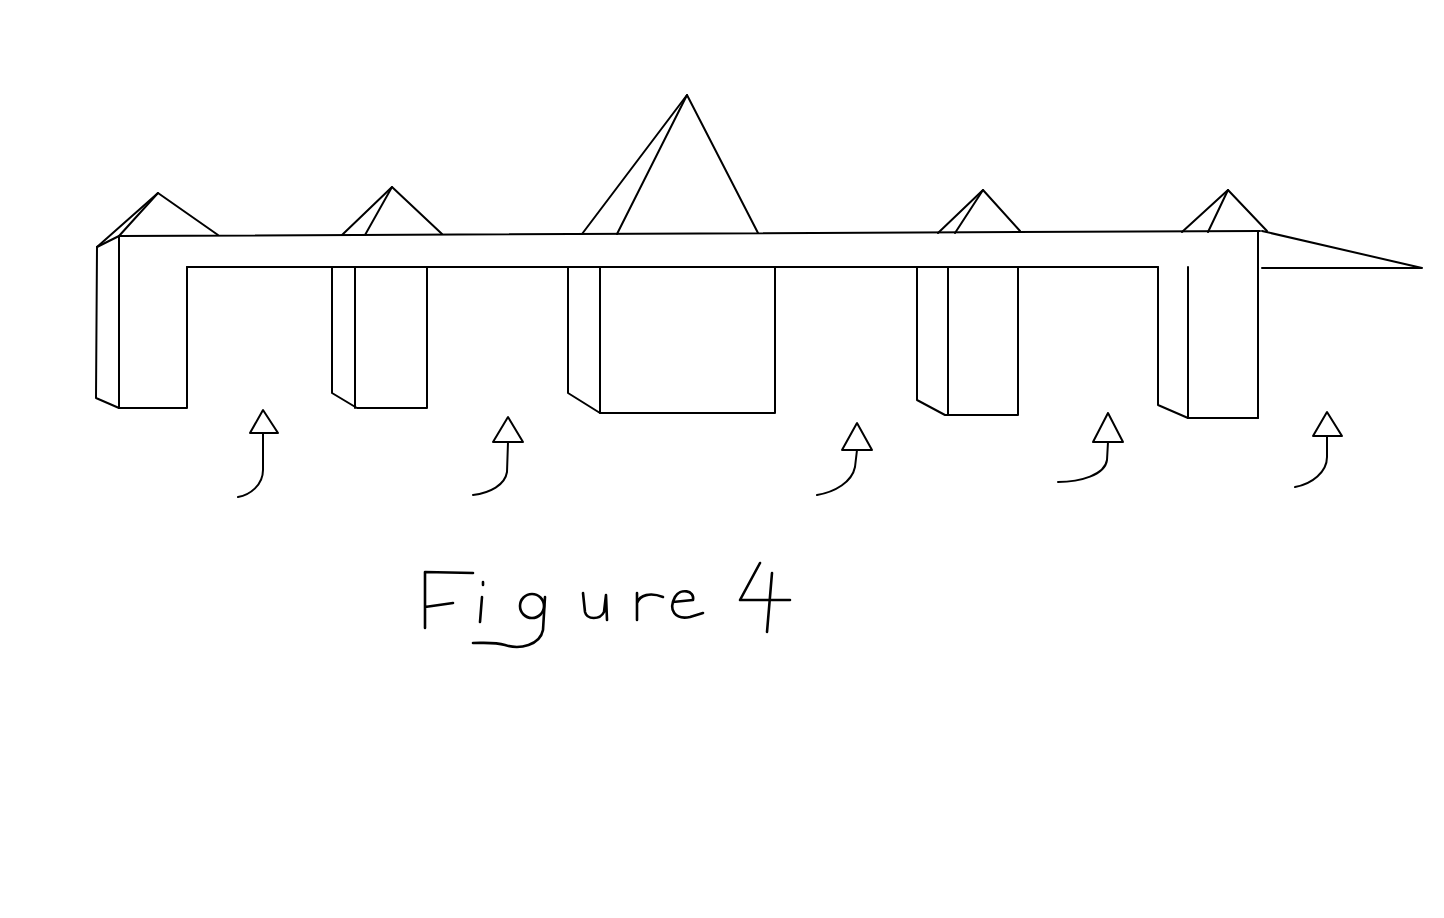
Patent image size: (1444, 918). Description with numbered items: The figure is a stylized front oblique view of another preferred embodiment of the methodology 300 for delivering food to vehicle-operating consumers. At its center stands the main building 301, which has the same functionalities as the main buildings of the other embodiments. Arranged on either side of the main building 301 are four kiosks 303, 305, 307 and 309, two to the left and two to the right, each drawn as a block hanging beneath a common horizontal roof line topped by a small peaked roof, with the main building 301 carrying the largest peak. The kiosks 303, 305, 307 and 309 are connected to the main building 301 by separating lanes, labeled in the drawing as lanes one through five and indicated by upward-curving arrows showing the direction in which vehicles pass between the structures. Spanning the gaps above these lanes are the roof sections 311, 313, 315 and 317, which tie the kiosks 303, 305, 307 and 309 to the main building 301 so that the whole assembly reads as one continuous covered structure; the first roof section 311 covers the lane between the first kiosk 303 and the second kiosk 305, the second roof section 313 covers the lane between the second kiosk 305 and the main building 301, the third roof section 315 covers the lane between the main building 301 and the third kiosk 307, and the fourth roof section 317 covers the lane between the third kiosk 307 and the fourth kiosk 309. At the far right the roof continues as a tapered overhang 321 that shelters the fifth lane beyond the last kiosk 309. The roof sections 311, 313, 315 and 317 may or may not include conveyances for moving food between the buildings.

The methodology for delivering food to vehicle-operating consumers 300 is at (775, 100).
The main building 301 is at (647, 147).
The kiosk 303 is at (167, 222).
The kiosk 305 is at (403, 208).
The kiosk 307 is at (987, 222).
The kiosk 309 is at (1232, 217).
The roof section 311 is at (270, 253).
The roof section 313 is at (517, 243).
The roof section 315 is at (840, 250).
The roof section 317 is at (1103, 247).
The overhang 321 is at (1343, 258).